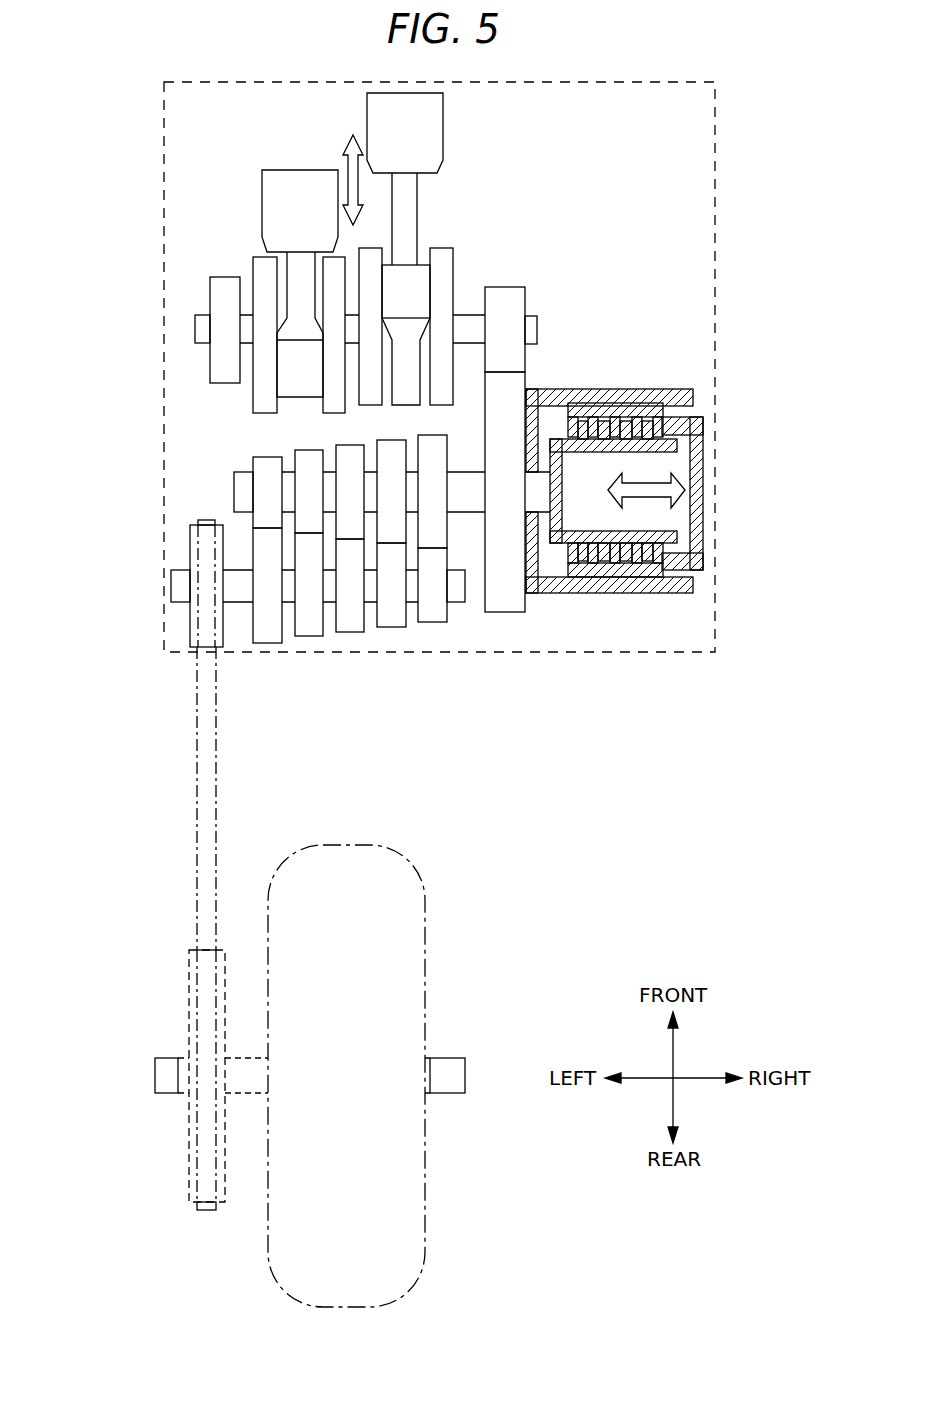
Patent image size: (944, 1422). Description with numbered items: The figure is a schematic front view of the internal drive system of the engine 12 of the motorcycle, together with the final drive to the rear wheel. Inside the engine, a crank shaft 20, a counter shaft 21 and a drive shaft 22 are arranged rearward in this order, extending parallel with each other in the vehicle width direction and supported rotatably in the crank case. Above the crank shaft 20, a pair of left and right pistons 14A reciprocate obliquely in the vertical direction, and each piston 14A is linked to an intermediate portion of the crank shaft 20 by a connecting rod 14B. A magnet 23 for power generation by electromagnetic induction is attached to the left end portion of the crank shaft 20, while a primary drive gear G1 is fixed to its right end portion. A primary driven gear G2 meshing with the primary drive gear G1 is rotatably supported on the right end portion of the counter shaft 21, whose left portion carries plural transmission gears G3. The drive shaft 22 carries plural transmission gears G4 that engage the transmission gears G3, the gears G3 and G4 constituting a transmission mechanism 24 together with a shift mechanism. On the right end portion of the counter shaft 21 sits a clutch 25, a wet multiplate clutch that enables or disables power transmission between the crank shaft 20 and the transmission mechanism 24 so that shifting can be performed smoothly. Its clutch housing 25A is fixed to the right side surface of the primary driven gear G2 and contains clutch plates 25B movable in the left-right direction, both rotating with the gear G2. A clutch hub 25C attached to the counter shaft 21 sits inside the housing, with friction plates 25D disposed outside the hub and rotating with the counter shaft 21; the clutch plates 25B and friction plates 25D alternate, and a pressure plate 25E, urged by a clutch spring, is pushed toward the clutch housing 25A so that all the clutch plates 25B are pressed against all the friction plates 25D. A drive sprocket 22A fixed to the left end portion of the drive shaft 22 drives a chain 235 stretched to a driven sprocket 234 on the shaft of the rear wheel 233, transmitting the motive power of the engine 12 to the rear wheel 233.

The engine 12 is at (726, 148).
The piston 14A is at (443, 120).
The connecting rod 14B is at (413, 195).
The crank shaft 20 is at (197, 332).
The counter shaft 21 is at (238, 488).
The drive shaft 22 is at (175, 588).
The drive sprocket 22A is at (190, 632).
The magnet 23 is at (213, 288).
The transmission mechanism 24 is at (316, 600).
The clutch 25 is at (683, 546).
The clutch housing 25A is at (670, 593).
The clutch plates 25B is at (616, 572).
The clutch hub 25C is at (673, 535).
The friction plates 25D is at (652, 545).
The pressure plate 25E is at (697, 462).
The rear wheel 233 is at (425, 960).
The driven sprocket 234 is at (189, 980).
The chain 235 is at (197, 800).
The primary drive gear G1 is at (520, 298).
The primary driven gear G2 is at (522, 380).
The transmission gears G3 is at (456, 531).
The transmission gears G4 is at (376, 638).